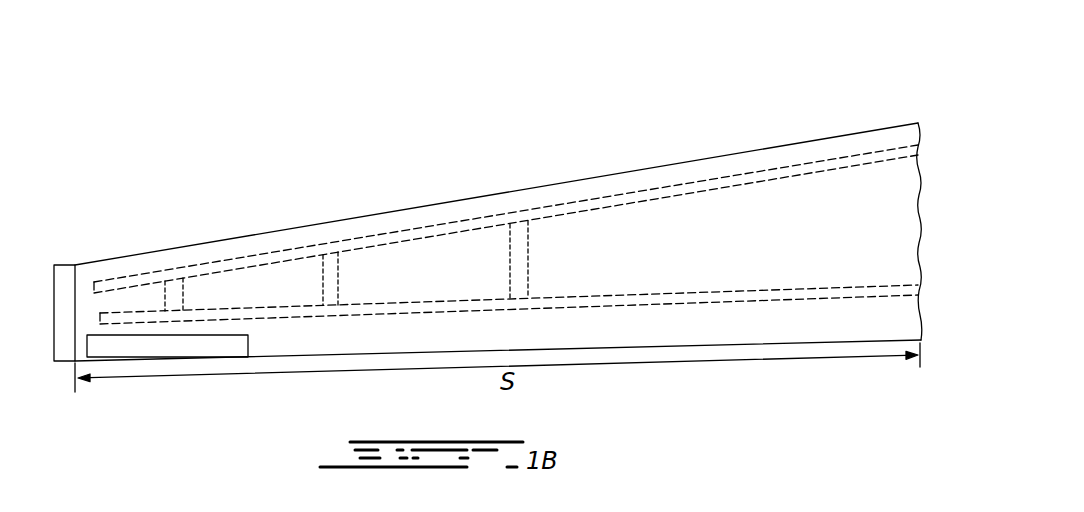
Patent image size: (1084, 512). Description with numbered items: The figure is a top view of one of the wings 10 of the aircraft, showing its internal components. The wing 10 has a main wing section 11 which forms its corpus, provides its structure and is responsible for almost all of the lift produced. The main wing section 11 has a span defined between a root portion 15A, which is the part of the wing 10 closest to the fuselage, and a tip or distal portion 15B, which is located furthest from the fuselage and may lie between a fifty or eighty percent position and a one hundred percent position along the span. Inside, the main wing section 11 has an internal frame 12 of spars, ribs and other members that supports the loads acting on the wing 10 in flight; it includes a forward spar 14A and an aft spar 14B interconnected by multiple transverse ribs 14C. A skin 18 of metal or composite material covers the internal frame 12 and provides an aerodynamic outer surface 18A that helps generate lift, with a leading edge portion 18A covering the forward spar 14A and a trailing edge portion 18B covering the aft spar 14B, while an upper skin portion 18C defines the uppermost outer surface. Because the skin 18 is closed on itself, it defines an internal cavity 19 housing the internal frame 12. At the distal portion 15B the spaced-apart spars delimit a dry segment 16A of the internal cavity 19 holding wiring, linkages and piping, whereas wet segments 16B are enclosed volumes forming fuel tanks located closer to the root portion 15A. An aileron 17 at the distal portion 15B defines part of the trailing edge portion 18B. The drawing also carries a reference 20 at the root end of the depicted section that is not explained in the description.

The wing 10 is at (289, 174).
The main wing section 11 is at (689, 165).
The internal frame 12 is at (849, 187).
The forward spar 14A is at (633, 203).
The aft spar 14B is at (800, 285).
The transverse ribs 14C is at (183, 296).
The root portion 15A is at (924, 111).
The distal portion 15B is at (77, 250).
The dry segment 16A is at (125, 297).
The wet segments 16B is at (463, 277).
The aileron 17 is at (248, 343).
The skin 18 is at (885, 318).
The leading edge portion 18A is at (522, 192).
The trailing edge portion 18B is at (631, 345).
The upper skin portion 18C is at (805, 214).
The internal cavity 19 is at (483, 260).
The root reference 20 is at (61, 379).